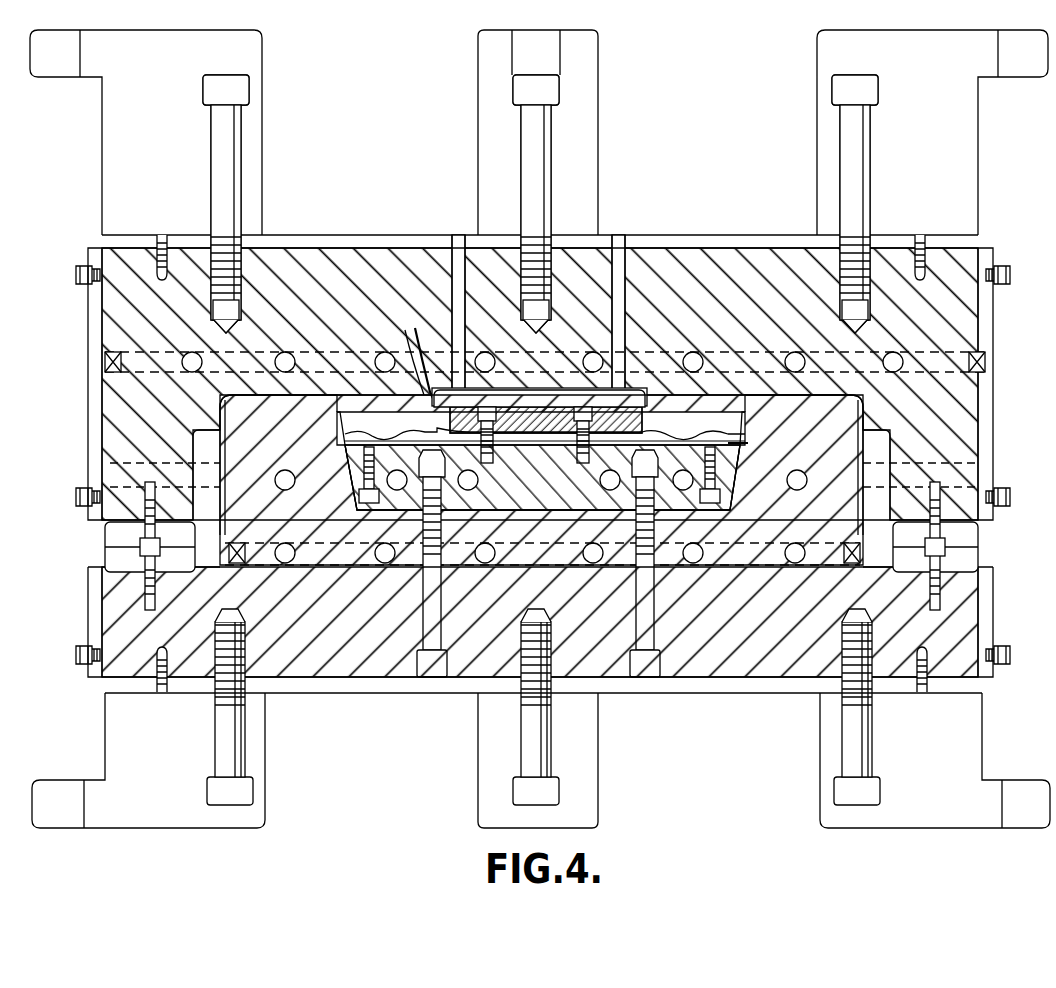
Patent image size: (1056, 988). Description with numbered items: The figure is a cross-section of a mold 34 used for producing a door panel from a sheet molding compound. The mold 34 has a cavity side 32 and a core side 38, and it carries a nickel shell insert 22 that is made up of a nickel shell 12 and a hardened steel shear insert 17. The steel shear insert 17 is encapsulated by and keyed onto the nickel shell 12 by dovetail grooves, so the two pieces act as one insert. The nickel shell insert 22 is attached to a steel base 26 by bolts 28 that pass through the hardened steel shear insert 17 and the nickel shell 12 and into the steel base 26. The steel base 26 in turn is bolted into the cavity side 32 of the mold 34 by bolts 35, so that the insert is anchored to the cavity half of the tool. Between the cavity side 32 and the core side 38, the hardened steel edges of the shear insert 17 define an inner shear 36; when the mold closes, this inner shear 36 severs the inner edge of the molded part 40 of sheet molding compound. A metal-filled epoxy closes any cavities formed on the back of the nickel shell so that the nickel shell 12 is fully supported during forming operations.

The nickel shell 12 is at (728, 452).
The hardened steel shear insert 17 is at (532, 410).
The nickel shell insert 22 is at (717, 513).
The steel base 26 is at (520, 512).
The bolts 28 is at (605, 433).
The cavity side 32 is at (380, 694).
The mold 34 is at (366, 188).
The bolts 35 is at (423, 613).
The inner shear 36 is at (420, 396).
The core side 38 is at (711, 232).
The molded part 40 is at (384, 437).